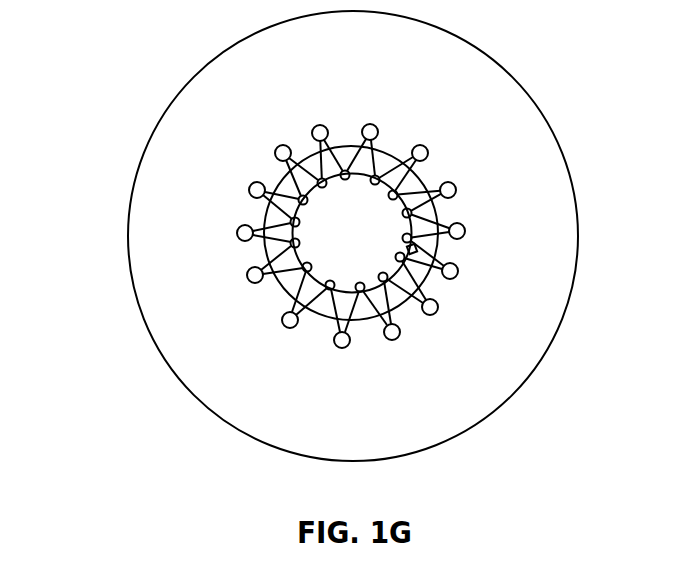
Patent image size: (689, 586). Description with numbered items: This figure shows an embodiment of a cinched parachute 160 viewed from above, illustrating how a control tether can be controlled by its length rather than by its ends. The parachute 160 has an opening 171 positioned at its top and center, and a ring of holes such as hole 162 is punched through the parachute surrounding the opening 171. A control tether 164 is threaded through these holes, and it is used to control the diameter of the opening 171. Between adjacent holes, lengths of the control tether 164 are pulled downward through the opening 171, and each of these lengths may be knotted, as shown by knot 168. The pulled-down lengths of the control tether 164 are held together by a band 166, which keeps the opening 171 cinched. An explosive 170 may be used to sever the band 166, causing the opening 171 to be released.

The parachute 160 is at (127, 222).
The hole 162 is at (276, 151).
The control tether 164 is at (313, 140).
The band 166 is at (291, 242).
The knot 168 is at (420, 217).
The explosive 170 is at (420, 251).
The opening 171 is at (283, 287).